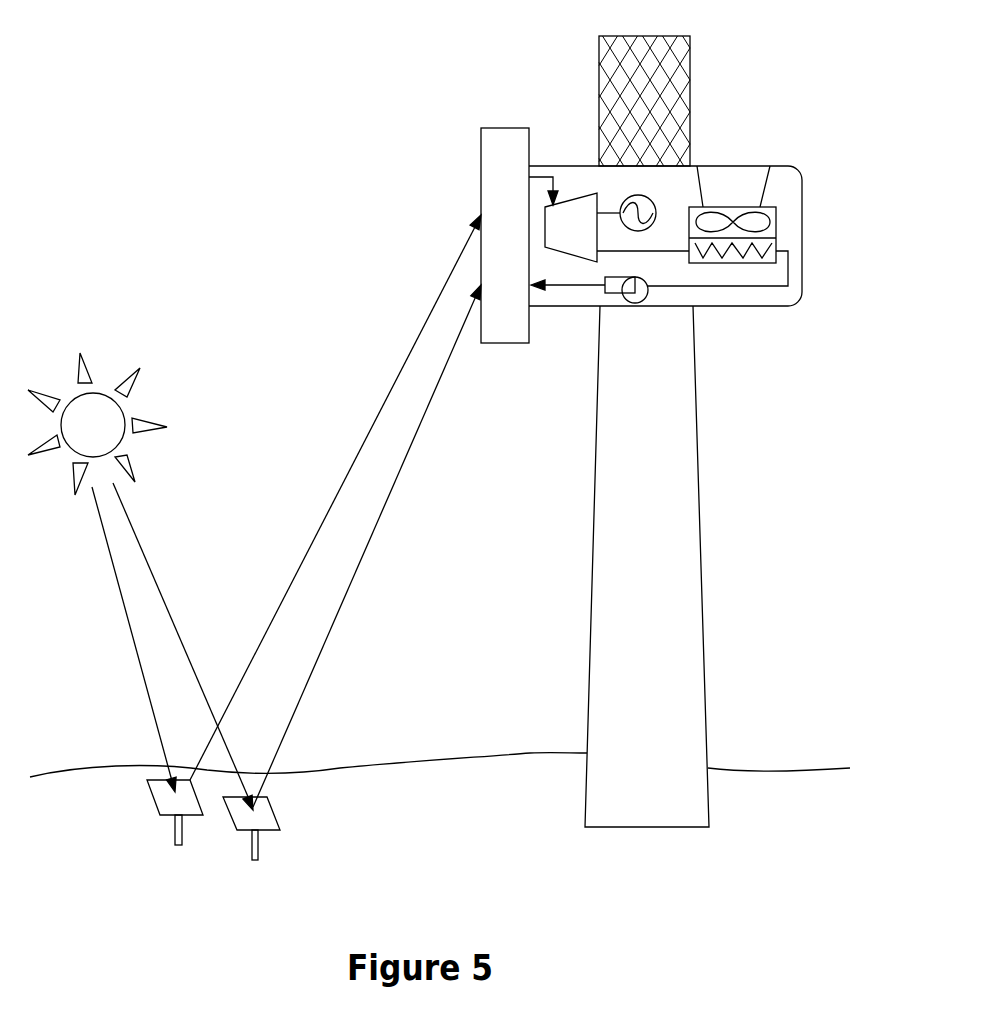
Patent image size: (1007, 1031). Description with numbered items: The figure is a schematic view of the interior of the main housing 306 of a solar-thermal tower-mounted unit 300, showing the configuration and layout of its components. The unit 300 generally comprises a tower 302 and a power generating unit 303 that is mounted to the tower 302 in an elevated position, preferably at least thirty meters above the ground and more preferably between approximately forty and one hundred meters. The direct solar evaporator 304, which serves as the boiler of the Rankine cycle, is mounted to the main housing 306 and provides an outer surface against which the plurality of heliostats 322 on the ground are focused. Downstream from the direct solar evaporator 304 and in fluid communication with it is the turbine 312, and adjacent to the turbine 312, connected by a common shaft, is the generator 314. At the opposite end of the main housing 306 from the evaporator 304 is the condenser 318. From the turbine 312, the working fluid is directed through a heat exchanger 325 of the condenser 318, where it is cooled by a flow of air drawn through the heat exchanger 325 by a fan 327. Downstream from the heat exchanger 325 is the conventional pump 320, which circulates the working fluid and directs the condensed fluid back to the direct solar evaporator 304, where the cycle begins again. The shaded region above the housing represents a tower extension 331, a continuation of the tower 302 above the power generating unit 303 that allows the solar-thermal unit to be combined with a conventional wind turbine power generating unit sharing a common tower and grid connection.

The solar-thermal tower-mounted unit 300 is at (255, 114).
The tower 302 is at (695, 447).
The power generating unit 303 is at (653, 220).
The direct solar evaporator 304 is at (498, 127).
The main housing 306 is at (797, 167).
The turbine 312 is at (563, 252).
The generator 314 is at (638, 195).
The condenser 318 is at (758, 274).
The pump 320 is at (627, 301).
The heliostats 322 is at (150, 797).
The heat exchanger 325 is at (755, 264).
The fan 327 is at (776, 229).
The tower extension 331 is at (690, 57).